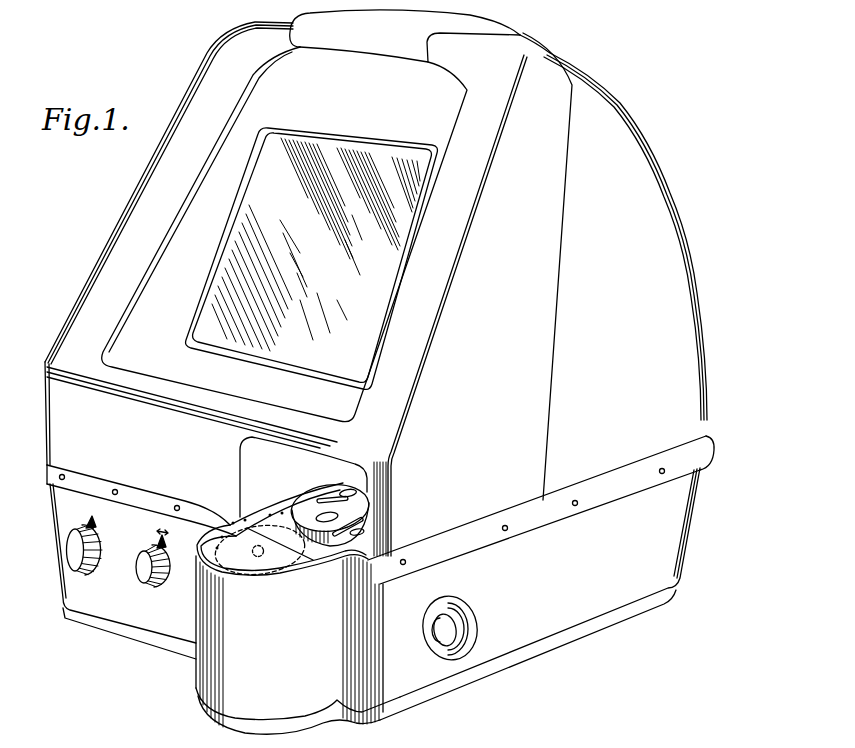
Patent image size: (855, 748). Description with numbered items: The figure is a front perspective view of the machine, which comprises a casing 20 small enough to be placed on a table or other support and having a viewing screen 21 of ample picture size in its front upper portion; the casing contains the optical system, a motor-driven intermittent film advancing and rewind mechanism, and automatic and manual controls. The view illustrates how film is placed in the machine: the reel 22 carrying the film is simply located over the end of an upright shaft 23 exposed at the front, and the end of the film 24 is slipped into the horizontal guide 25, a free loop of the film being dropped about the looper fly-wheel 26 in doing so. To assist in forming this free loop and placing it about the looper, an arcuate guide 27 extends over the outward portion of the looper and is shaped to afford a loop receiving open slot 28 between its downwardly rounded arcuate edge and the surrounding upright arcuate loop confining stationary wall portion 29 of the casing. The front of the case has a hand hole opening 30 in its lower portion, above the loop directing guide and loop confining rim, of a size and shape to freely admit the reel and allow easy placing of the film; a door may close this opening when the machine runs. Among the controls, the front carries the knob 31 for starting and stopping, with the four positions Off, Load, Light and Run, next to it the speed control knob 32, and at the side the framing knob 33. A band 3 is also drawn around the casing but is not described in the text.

The clamping band 3 is at (45, 478).
The casing 20 is at (653, 193).
The viewing screen 21 is at (277, 347).
The reel 22 is at (376, 521).
The upright shaft 23 is at (366, 507).
The film 24 is at (262, 520).
The horizontal guide 25 is at (291, 495).
The looper fly-wheel 26 is at (290, 540).
The arcuate guide 27 is at (251, 567).
The loop receiving open slot 28 is at (210, 560).
The stationary wall portion 29 is at (328, 562).
The hand hole opening 30 is at (240, 470).
The knob 31 is at (75, 553).
The speed control knob 32 is at (145, 574).
The framing knob 33 is at (450, 640).